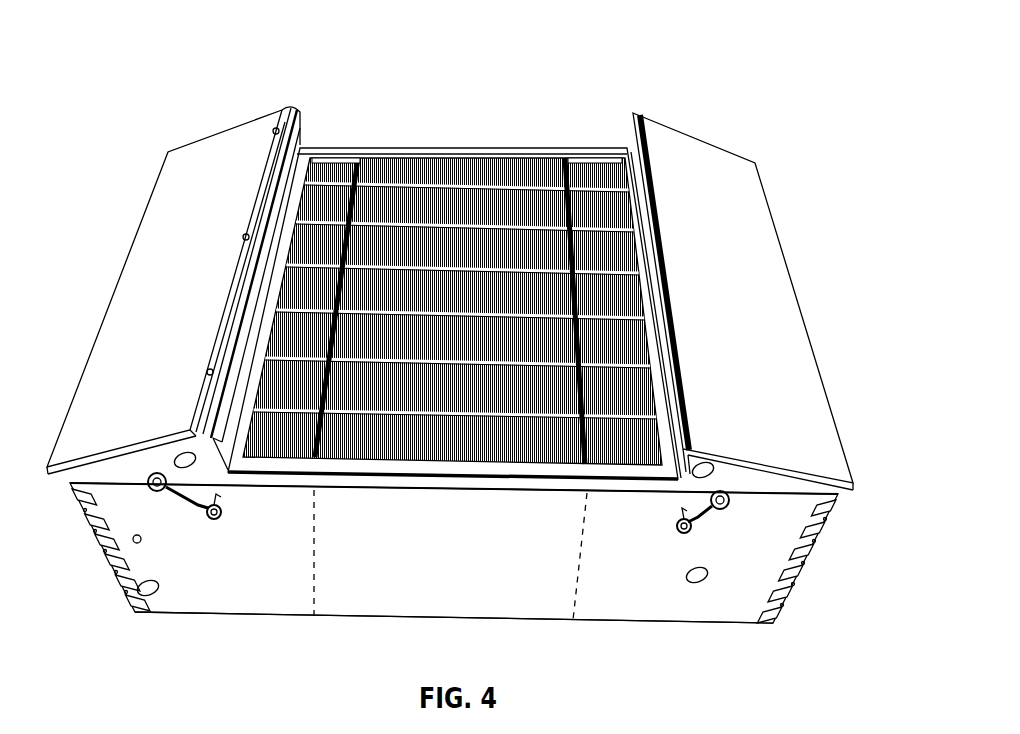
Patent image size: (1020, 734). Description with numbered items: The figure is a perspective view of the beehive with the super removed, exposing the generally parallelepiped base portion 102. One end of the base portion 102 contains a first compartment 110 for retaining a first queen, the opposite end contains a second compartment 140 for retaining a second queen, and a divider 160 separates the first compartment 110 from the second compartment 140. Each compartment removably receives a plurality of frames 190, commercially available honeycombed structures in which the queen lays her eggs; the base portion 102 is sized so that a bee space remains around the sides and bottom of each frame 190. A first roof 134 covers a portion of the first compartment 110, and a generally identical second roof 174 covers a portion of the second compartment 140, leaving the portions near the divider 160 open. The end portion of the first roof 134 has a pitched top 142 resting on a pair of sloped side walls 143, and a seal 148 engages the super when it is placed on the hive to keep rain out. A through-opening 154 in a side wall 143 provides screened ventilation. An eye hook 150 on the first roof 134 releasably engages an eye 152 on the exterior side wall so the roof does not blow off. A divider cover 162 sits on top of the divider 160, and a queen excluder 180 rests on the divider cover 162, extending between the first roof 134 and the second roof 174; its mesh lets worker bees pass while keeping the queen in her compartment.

The base portion 102 is at (690, 614).
The first compartment 110 is at (168, 604).
The first roof 134 is at (205, 148).
The second compartment 140 is at (797, 556).
The pitched top 142 is at (147, 232).
The sloped side walls 143 is at (97, 489).
The seal 148 is at (282, 114).
The eye hook 150 is at (175, 498).
The eye 152 is at (220, 518).
The through-opening 154 is at (182, 455).
The divider 160 is at (368, 599).
The divider cover 162 is at (455, 485).
The second roof 174 is at (696, 153).
The queen excluder 180 is at (626, 474).
The frames 190 is at (314, 162).